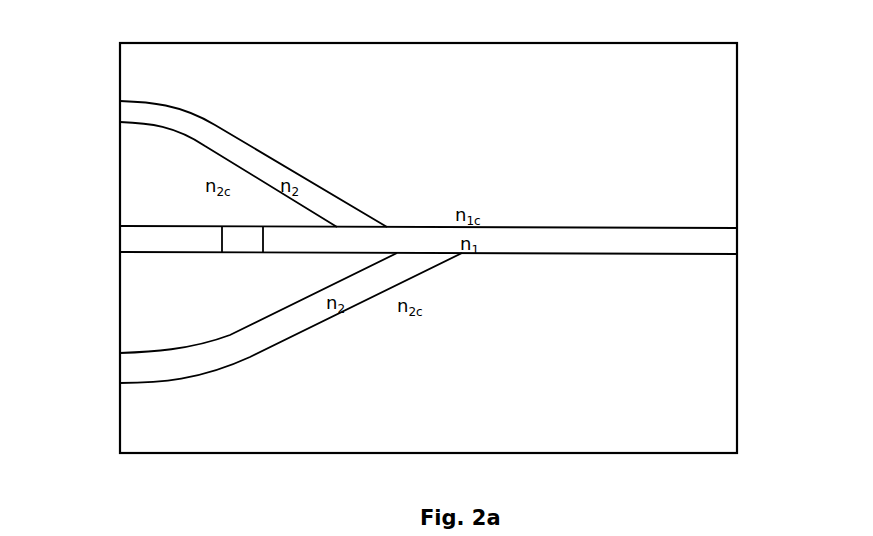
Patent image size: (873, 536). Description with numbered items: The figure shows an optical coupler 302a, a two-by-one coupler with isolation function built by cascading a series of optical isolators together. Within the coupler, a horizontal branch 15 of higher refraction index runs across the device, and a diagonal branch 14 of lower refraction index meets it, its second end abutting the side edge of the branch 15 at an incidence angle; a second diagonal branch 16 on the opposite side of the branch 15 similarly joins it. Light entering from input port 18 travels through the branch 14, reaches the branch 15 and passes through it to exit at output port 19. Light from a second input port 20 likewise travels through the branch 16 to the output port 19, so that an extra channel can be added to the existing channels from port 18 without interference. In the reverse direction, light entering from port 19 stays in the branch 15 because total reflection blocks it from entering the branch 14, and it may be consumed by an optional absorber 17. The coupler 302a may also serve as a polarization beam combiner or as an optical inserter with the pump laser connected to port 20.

The optical coupler 302a is at (430, 228).
The branch 14 is at (232, 145).
The branch 15 is at (543, 238).
The second waveguide arm 16 is at (268, 339).
The absorber 17 is at (238, 240).
The port 18 is at (49, 123).
The port 19 is at (791, 243).
The port 20 is at (49, 360).